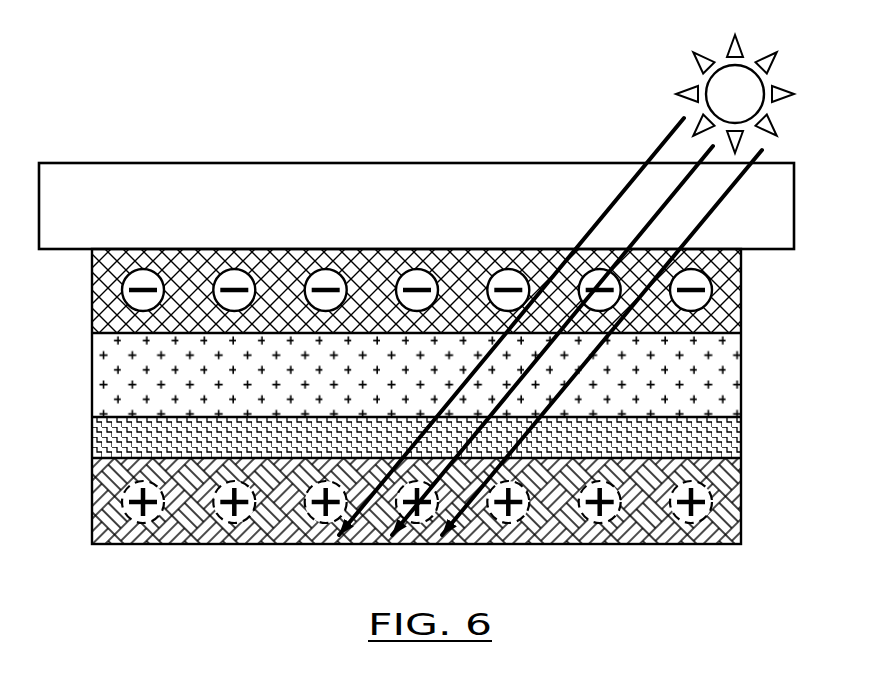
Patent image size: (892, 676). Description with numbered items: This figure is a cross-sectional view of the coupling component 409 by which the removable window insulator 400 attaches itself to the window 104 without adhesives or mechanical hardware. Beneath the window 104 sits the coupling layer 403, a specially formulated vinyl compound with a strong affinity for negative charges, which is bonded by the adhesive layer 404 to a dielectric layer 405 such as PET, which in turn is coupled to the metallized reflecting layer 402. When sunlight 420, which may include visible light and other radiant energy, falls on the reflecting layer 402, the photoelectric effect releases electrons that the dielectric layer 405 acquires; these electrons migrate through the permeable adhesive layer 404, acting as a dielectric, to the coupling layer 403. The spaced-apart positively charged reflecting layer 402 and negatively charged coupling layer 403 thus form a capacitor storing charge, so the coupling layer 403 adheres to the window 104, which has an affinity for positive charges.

The window 104 is at (161, 162).
The window insulator 400 is at (176, 597).
The reflecting layer 402 is at (108, 514).
The coupling layer 403 is at (108, 294).
The adhesive layer 404 is at (108, 376).
The dielectric layer 405 is at (108, 437).
The coupling component 409 is at (798, 445).
The sunlight 420 is at (656, 145).